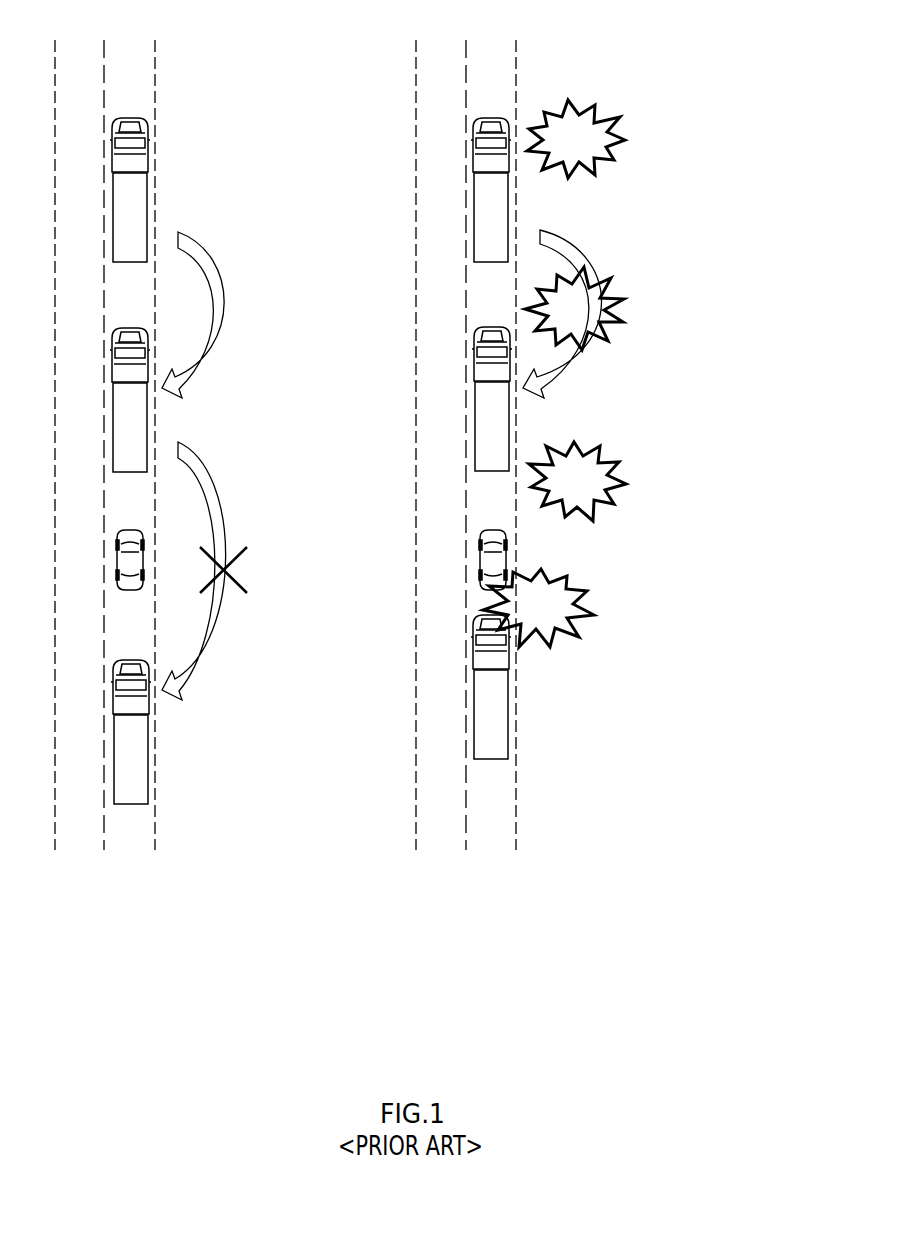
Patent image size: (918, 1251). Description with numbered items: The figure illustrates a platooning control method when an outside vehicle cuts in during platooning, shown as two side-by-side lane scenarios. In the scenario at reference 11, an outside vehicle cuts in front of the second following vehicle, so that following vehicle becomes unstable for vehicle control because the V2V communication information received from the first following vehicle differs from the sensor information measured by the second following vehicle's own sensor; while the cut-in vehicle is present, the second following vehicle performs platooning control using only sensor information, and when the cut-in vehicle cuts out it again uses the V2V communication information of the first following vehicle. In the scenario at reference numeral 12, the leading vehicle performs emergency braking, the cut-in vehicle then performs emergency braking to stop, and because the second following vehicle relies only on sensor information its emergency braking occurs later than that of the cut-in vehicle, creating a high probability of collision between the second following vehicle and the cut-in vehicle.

The cut-in scenario 11 is at (235, 428).
The emergency braking scenario 12 is at (644, 429).